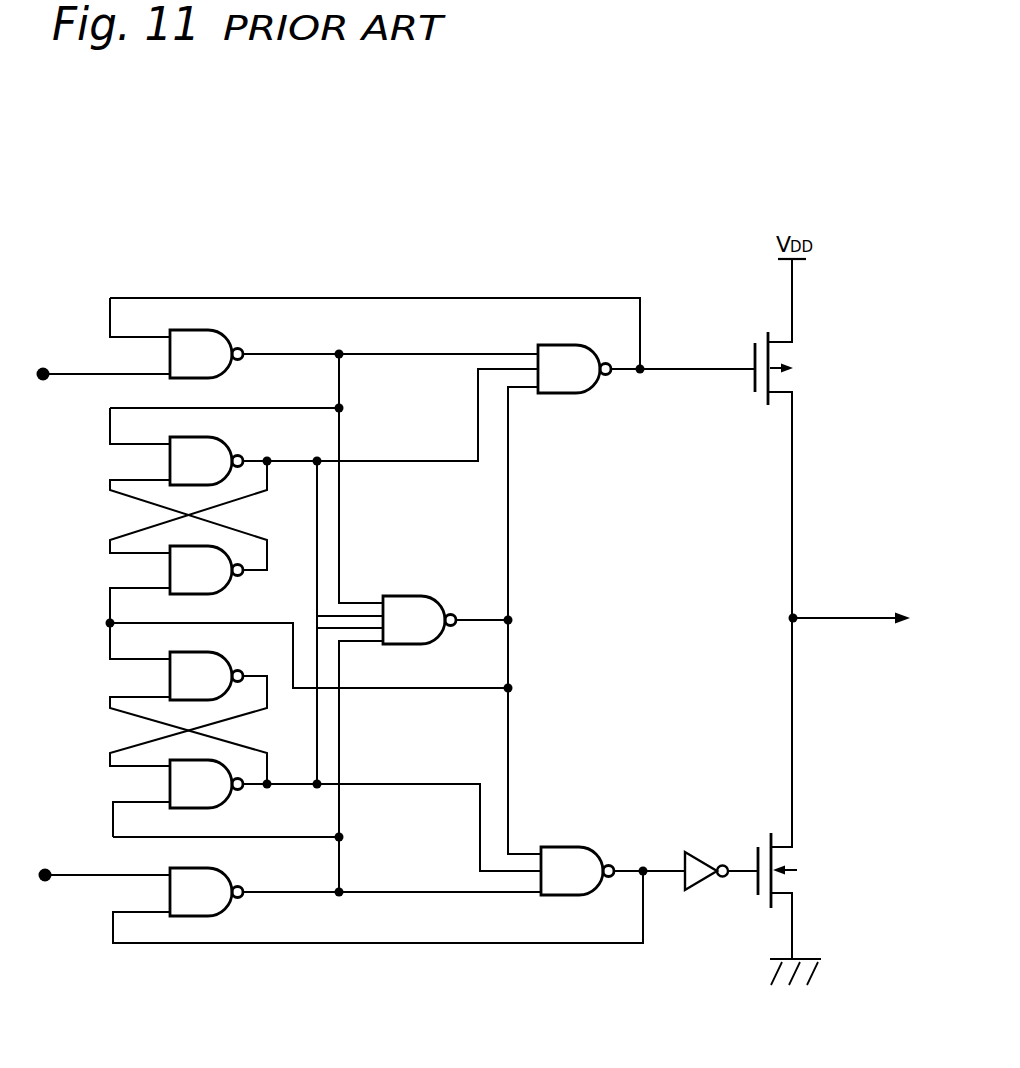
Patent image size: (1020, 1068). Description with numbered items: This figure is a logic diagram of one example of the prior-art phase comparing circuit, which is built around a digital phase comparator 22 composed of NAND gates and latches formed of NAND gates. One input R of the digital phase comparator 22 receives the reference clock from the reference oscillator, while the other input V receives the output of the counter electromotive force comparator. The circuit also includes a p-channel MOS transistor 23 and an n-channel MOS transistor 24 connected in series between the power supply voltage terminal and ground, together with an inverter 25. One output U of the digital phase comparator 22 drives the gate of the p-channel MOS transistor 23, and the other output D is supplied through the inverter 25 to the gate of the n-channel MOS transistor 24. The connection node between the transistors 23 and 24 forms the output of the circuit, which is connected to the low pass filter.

The digital phase comparator 22 is at (290, 290).
The p-channel MOS transistor 23 is at (802, 362).
The n-channel MOS transistor 24 is at (805, 863).
The inverter 25 is at (697, 853).